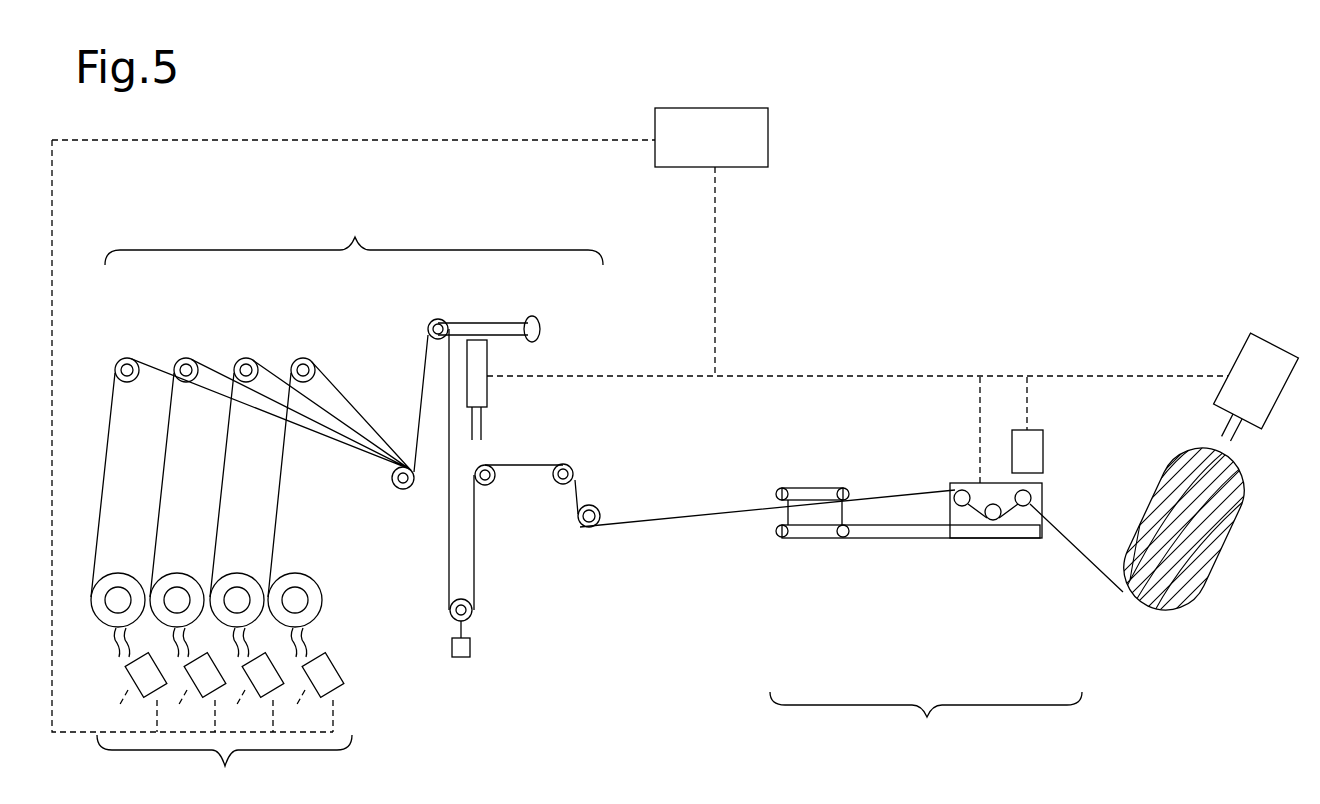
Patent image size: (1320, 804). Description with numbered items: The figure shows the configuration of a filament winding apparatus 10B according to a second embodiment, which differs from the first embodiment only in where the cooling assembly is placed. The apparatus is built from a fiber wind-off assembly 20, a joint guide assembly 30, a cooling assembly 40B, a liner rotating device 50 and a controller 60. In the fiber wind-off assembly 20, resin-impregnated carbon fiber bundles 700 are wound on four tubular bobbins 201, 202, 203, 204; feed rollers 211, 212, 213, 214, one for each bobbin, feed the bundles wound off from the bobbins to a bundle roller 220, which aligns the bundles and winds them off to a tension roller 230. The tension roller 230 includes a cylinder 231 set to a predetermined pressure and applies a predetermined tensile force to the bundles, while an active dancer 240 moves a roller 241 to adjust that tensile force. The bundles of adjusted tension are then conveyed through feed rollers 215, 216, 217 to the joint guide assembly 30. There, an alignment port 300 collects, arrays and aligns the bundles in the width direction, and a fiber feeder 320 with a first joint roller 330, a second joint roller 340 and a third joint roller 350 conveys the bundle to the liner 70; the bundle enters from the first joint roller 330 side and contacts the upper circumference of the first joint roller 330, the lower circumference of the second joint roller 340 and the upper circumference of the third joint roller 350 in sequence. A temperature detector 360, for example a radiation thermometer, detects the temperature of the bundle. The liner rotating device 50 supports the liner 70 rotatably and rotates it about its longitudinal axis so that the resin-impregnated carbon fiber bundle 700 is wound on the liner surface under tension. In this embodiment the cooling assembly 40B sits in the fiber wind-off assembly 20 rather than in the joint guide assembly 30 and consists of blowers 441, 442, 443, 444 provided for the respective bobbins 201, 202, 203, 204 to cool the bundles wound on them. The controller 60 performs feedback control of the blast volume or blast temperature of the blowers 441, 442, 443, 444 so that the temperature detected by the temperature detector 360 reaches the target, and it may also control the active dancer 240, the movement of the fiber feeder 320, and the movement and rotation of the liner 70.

The filament winding apparatus 10B is at (1004, 247).
The fiber wind-off assembly 20 is at (354, 236).
The joint guide assembly 30 is at (926, 726).
The cooling assembly 40B is at (224, 768).
The liner rotating device 50 is at (1266, 338).
The controller 60 is at (756, 108).
The liner 70 is at (1151, 626).
The bobbin 201 is at (124, 573).
The bobbin 202 is at (183, 573).
The bobbin 203 is at (243, 573).
The bobbin 204 is at (301, 573).
The feed roller 211 is at (127, 357).
The feed roller 212 is at (186, 357).
The feed roller 213 is at (246, 357).
The feed roller 214 is at (303, 357).
The feed roller 215 is at (493, 484).
The feed roller 216 is at (566, 463).
The feed roller 217 is at (598, 506).
The bundle roller 220 is at (405, 490).
The tension roller 230 is at (433, 318).
The cylinder 231 is at (488, 360).
The active dancer 240 is at (465, 635).
The roller 241 is at (462, 600).
The alignment port 300 is at (818, 486).
The fiber feeder 320 is at (960, 482).
The first joint roller 330 is at (960, 507).
The second joint roller 340 is at (993, 521).
The third joint roller 350 is at (1025, 507).
The temperature detector 360 is at (1037, 430).
The blower 441 is at (131, 681).
The blower 442 is at (190, 681).
The blower 443 is at (249, 681).
The blower 444 is at (309, 681).
The resin-impregnated carbon fiber bundle 700 is at (104, 458).